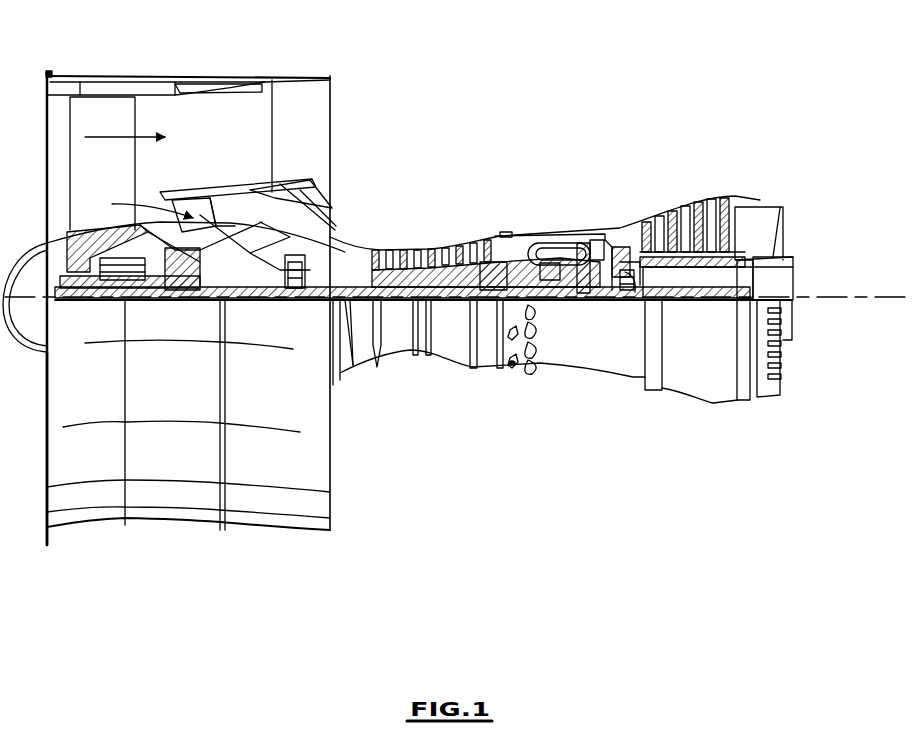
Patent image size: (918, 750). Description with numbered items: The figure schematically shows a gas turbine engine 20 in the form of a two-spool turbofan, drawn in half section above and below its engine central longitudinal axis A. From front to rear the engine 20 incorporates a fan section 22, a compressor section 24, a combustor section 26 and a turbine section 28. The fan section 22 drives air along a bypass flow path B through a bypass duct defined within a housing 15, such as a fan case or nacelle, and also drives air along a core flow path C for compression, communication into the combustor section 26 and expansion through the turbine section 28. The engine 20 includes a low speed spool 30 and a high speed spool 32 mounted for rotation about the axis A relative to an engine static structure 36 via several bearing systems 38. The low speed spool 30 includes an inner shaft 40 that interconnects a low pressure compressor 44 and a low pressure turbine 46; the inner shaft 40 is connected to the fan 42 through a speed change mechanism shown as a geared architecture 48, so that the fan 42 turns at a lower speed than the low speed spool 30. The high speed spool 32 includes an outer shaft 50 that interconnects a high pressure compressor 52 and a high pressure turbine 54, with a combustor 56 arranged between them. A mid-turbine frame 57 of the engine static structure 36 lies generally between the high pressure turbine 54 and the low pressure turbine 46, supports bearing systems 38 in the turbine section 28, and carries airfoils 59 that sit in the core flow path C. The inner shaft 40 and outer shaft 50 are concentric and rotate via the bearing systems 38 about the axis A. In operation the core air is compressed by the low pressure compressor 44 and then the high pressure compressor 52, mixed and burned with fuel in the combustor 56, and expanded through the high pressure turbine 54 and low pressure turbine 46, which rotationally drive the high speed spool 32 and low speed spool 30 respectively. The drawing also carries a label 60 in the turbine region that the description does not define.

The housing 15 is at (190, 81).
The gas turbine engine 20 is at (553, 115).
The fan section 22 is at (134, 67).
The compressor section 24 is at (372, 220).
The combustor section 26 is at (548, 212).
The turbine section 28 is at (676, 175).
The low speed spool 30 is at (455, 305).
The high speed spool 32 is at (485, 247).
The engine static structure 36 is at (485, 372).
The bearing systems 38 is at (300, 298).
The inner shaft 40 is at (352, 347).
The fan 42 is at (118, 176).
The low pressure compressor 44 is at (290, 205).
The low pressure turbine 46 is at (696, 210).
The geared architecture 48 is at (192, 297).
The outer shaft 50 is at (558, 290).
The high pressure compressor 52 is at (438, 243).
The high pressure turbine 54 is at (630, 228).
The combustor 56 is at (543, 253).
The mid-turbine frame 57 is at (638, 232).
The airfoils 59 is at (655, 276).
The turbine stage 60 is at (641, 230).
The engine central longitudinal axis A is at (856, 297).
The bypass flow path B is at (110, 136).
The core flow path C is at (143, 206).